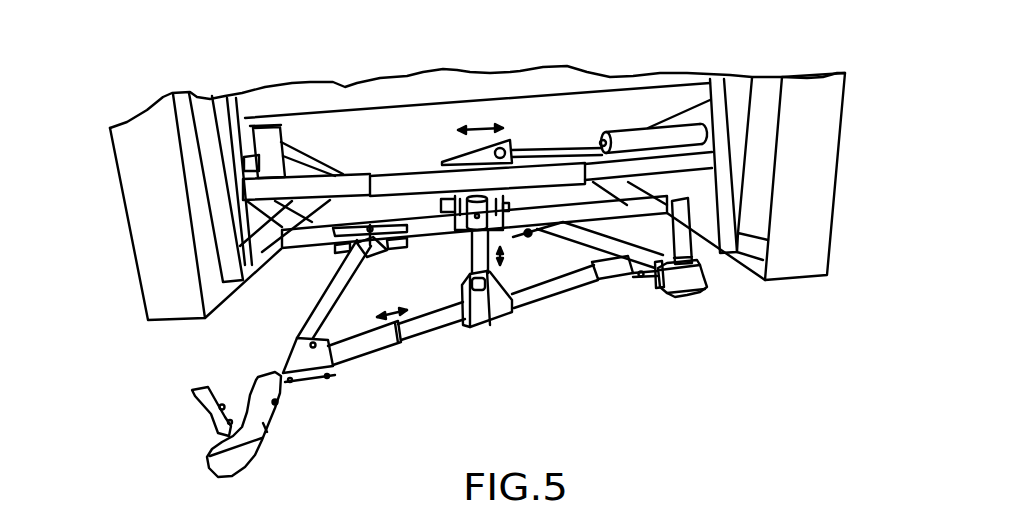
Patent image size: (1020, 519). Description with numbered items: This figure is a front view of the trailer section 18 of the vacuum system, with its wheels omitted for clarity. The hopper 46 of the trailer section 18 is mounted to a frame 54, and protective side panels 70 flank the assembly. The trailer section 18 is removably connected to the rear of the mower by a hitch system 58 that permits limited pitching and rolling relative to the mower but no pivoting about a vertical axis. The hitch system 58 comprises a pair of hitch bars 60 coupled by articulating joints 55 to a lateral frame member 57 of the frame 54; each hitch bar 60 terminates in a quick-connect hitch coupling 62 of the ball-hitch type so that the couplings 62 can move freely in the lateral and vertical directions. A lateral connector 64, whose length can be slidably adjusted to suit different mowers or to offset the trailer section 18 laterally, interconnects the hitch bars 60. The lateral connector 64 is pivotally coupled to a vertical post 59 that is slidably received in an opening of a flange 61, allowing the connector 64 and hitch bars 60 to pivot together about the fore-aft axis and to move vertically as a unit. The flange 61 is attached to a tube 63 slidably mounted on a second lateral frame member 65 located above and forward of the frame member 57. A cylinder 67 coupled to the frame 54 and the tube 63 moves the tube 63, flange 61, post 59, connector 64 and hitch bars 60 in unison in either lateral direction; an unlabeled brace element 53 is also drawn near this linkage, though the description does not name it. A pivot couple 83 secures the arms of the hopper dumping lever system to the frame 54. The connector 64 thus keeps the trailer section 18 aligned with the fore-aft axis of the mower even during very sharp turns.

The trailer section 18 is at (120, 257).
The hopper 46 is at (463, 80).
The brace strut 53 is at (543, 252).
The frame 54 is at (513, 238).
The articulating joints 55 is at (402, 262).
The lateral frame member 57 is at (312, 242).
The hitch system 58 is at (498, 340).
The vertical post 59 is at (477, 257).
The hitch bars 60 is at (607, 262).
The flange 61 is at (447, 208).
The quick-connect hitch coupling 62 is at (213, 460).
The tube 63 is at (547, 173).
The lateral connector 64 is at (417, 337).
The second lateral frame member 65 is at (337, 183).
The cylinder 67 is at (645, 135).
The protective side panels 70 is at (143, 143).
The pivot couple 83 is at (246, 160).